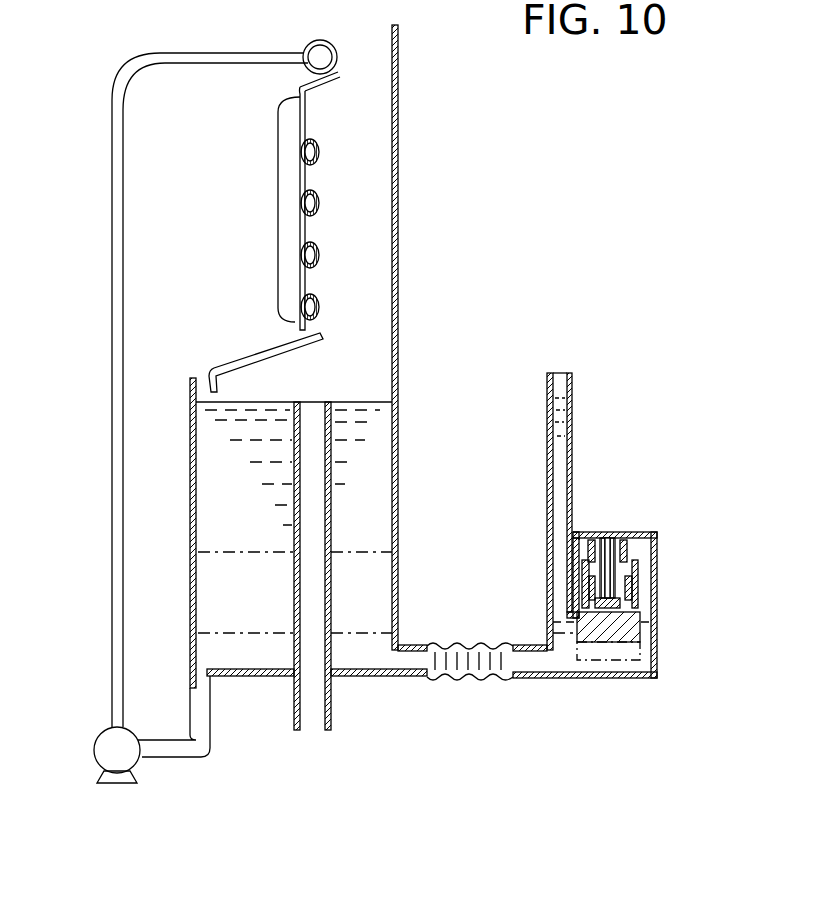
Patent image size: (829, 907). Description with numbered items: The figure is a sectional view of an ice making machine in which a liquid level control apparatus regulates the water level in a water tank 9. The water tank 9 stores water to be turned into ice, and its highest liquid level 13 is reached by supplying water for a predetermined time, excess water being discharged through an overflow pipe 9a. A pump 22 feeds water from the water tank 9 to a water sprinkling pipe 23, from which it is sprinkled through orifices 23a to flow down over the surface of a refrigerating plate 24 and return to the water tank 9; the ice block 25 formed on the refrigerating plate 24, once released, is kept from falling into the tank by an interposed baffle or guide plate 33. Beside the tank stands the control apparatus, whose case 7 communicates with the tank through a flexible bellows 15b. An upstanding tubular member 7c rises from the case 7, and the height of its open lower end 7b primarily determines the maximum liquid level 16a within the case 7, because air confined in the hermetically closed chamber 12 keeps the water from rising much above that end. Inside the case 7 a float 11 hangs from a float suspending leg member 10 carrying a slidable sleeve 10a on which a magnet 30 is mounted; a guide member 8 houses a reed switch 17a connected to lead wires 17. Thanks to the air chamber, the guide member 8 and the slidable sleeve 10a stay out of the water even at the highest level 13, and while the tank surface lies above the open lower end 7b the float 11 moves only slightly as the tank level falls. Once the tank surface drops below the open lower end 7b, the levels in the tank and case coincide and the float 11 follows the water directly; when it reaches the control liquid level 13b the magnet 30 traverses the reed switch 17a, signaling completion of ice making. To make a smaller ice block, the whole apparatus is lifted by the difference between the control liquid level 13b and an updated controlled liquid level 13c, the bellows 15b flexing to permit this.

The case 7 is at (655, 548).
The open lower end 7b is at (548, 615).
The upstanding tubular member 7c is at (574, 412).
The guide member 8 is at (577, 552).
The water tank 9 is at (399, 417).
The overflow pipe 9a is at (330, 466).
The float suspending leg member 10 is at (642, 540).
The slidable sleeve 10a is at (628, 545).
The float 11 is at (615, 645).
The hermetically closed chamber 12 is at (642, 583).
The highest liquid level 13 is at (362, 402).
The control liquid level 13b is at (205, 630).
The updated controlled liquid level 13c is at (223, 551).
The bellows 15b is at (460, 680).
The maximum liquid level 16a is at (640, 615).
The lead wires 17 is at (612, 535).
The reed switch 17a is at (622, 600).
The pump 22 is at (96, 735).
The water sprinkling pipe 23 is at (306, 46).
The orifices 23a is at (300, 76).
The refrigerating plate 24 is at (308, 110).
The ice block 25 is at (277, 191).
The magnet 30 is at (638, 563).
The baffle or guide plate 33 is at (250, 356).